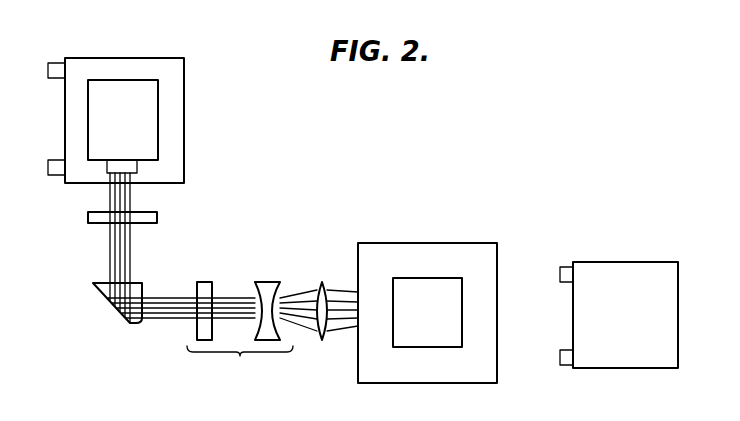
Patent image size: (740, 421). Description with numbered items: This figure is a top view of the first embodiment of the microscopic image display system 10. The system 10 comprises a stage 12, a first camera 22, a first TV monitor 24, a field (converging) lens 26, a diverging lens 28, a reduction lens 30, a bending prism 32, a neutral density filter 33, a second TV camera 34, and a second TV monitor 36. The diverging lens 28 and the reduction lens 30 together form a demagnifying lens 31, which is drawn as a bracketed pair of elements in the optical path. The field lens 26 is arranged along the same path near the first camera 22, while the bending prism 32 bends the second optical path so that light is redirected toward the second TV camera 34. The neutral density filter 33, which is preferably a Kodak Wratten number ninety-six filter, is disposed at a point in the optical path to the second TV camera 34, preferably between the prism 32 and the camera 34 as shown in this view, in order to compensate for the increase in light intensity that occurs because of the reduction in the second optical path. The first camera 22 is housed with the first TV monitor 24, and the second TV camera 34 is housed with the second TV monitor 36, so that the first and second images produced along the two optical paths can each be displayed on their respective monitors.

The microscopic image display system 10 is at (522, 160).
The stage 12 is at (487, 272).
The first camera 22 is at (462, 342).
The first TV monitor 24 is at (667, 307).
The field (converging) lens 26 is at (325, 290).
The diverging lens 28 is at (270, 285).
The reduction lens 30 is at (205, 288).
The demagnifying lens 31 is at (240, 363).
The bending prism 32 is at (102, 292).
The neutral density filter 33 is at (87, 221).
The second TV camera 34 is at (153, 120).
The second TV monitor 36 is at (143, 58).